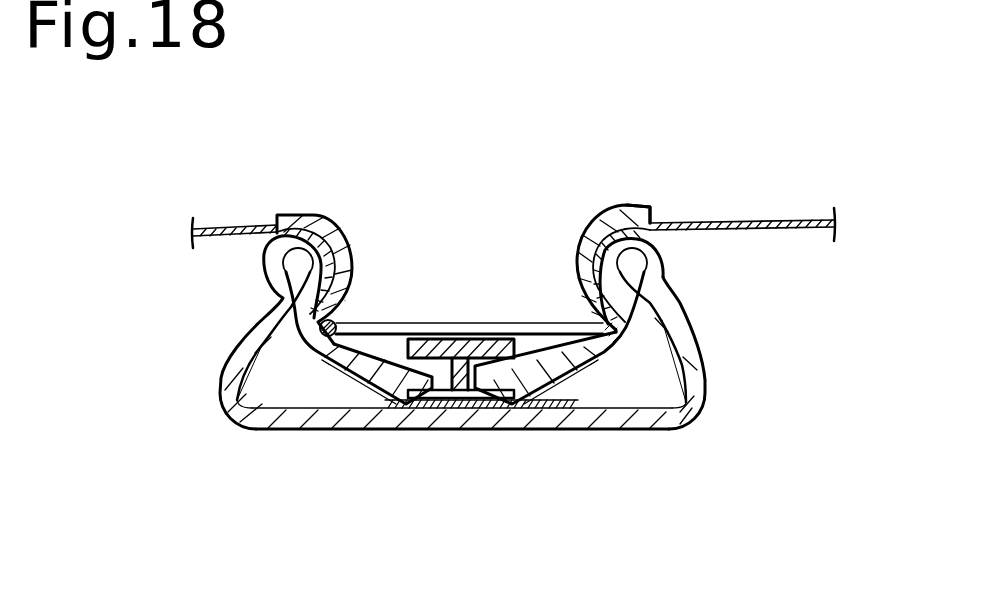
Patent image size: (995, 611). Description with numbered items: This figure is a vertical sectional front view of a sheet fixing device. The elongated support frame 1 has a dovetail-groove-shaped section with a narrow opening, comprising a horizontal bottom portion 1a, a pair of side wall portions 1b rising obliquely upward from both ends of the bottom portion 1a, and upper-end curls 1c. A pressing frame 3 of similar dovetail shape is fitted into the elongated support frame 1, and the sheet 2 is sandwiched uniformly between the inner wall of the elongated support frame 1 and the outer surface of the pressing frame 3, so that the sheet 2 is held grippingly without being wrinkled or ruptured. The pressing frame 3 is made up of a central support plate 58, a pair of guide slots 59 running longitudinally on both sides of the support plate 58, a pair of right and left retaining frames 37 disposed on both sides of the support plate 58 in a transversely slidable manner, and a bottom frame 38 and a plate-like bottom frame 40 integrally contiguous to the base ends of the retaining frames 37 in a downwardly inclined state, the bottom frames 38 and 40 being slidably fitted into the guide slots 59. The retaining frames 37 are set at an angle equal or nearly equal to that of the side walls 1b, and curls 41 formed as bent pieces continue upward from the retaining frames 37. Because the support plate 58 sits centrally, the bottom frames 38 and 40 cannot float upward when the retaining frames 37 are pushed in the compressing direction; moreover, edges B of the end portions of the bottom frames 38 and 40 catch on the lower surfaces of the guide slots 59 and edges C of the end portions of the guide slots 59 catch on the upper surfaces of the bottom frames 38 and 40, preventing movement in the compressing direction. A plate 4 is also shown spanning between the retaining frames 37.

The elongated support frame 1 is at (486, 437).
The horizontal bottom portion 1a is at (597, 418).
The side wall portions 1b is at (687, 357).
The upper-end curls 1c is at (667, 260).
The sheet 2 is at (727, 220).
The pressing frame 3 is at (482, 272).
The plate 4 is at (365, 320).
The retaining frames 37 is at (290, 290).
The bottom frame 38 is at (310, 407).
The plate-like bottom frame 40 is at (647, 407).
The curls 41 is at (630, 208).
The central support plate 58 is at (431, 334).
The guide slots 59 is at (477, 372).
The edges of end portions of the bottom frames B is at (390, 405).
The edges of end portions of the guide slots C is at (358, 407).